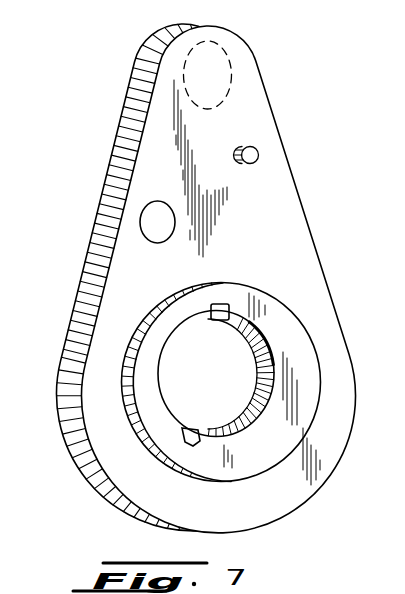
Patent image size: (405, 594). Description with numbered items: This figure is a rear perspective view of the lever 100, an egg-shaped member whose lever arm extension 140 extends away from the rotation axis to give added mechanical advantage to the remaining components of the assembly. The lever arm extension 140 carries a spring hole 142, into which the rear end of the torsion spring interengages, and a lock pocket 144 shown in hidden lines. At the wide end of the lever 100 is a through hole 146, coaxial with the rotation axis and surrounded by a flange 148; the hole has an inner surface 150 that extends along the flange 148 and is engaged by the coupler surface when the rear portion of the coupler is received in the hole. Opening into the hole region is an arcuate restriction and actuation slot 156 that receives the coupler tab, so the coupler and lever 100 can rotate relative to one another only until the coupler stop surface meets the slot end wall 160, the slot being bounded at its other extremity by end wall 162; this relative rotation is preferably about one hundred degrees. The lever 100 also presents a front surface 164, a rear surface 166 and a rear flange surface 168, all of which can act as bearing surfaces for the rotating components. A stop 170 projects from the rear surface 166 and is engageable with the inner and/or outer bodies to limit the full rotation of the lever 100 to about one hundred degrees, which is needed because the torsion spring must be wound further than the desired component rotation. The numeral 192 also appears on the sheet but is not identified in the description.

The lever 100 is at (120, 112).
The lever arm extension 140 is at (155, 149).
The spring hole 142 is at (141, 212).
The lock pocket 144 is at (218, 36).
The through hole 146 is at (235, 357).
The flange 148 is at (260, 462).
The inner surface 150 is at (264, 394).
The arcuate restriction and actuation slot 156 is at (183, 332).
The end wall 160 is at (184, 427).
The end wall 162 is at (213, 310).
The front surface 164 is at (96, 227).
The rear surface 166 is at (233, 117).
The rear flange surface 168 is at (309, 370).
The stop 170 is at (258, 150).
The reference 192 is at (386, 582).